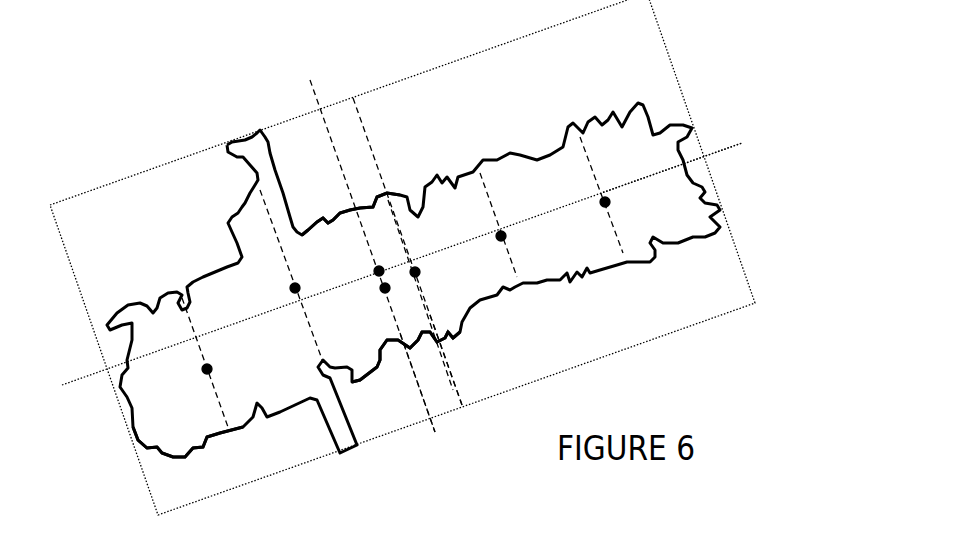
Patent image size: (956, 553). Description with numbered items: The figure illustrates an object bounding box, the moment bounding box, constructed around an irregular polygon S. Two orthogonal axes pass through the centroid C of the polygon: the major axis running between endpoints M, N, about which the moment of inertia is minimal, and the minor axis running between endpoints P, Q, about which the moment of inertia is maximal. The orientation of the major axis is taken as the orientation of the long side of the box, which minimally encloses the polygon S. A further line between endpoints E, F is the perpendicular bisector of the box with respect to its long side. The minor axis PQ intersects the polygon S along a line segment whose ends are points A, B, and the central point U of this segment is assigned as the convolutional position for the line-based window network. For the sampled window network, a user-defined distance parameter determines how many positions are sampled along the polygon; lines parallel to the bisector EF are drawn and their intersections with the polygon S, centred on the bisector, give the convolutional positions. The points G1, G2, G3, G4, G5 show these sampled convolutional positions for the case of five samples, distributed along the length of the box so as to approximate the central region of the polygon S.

The major axis endpoint M is at (390, 264).
The major axis endpoint N is at (672, 149).
The minor axis endpoint Q is at (360, 241).
The minor axis endpoint P is at (426, 406).
The bisector endpoint E is at (401, 235).
The bisector endpoint F is at (456, 379).
The centroid C is at (365, 266).
The central point U is at (373, 303).
The line segment endpoint B is at (351, 206).
The line segment endpoint A is at (406, 359).
The polygon S is at (188, 435).
The SIW-CNN convolutional position G1 is at (427, 295).
The SIW-CNN convolutional position G2 is at (514, 225).
The SIW-CNN convolutional position G3 is at (288, 276).
The SIW-CNN convolutional position G4 is at (618, 195).
The SIW-CNN convolutional position G5 is at (199, 362).